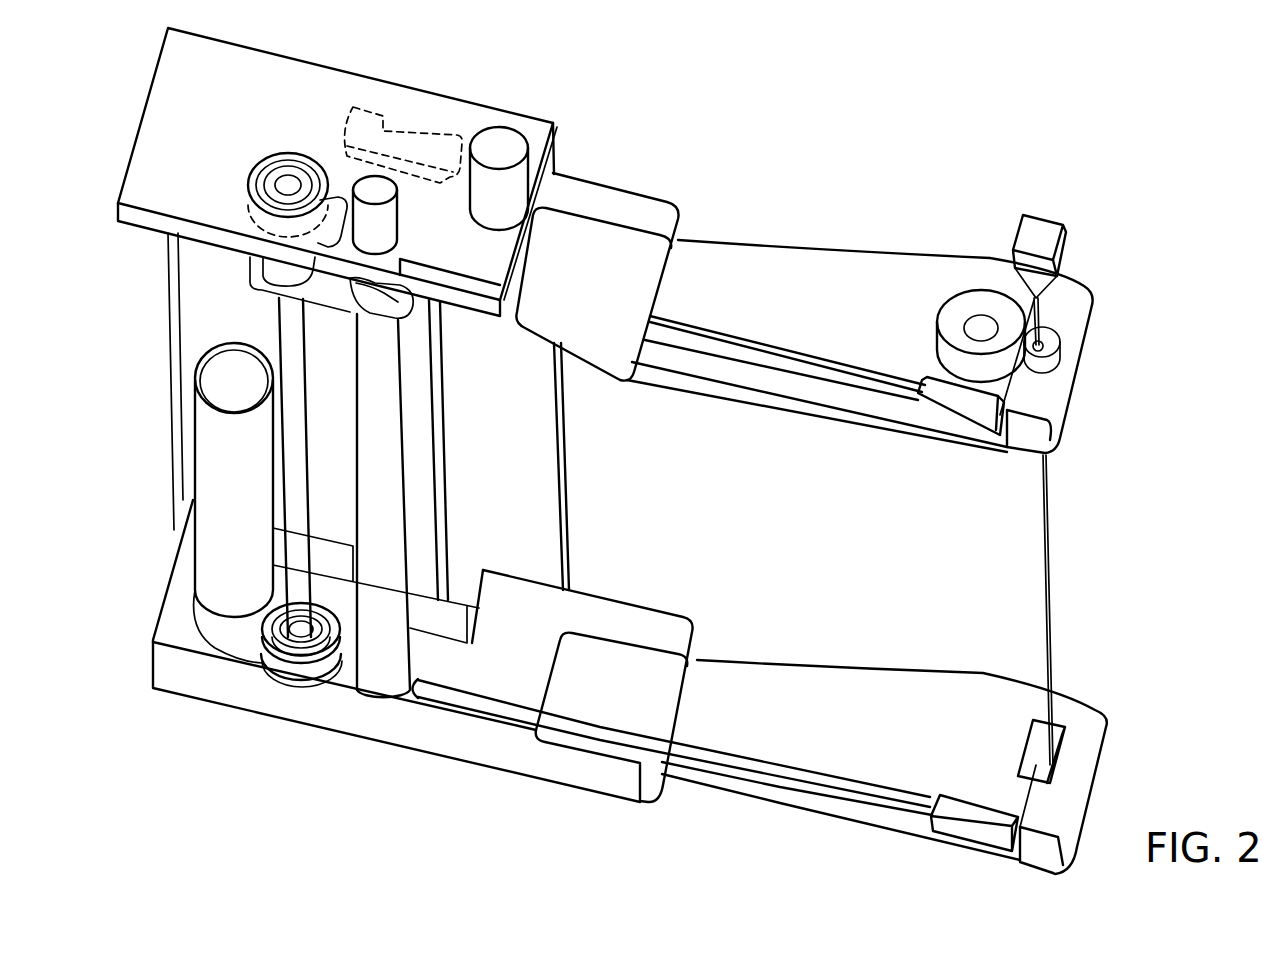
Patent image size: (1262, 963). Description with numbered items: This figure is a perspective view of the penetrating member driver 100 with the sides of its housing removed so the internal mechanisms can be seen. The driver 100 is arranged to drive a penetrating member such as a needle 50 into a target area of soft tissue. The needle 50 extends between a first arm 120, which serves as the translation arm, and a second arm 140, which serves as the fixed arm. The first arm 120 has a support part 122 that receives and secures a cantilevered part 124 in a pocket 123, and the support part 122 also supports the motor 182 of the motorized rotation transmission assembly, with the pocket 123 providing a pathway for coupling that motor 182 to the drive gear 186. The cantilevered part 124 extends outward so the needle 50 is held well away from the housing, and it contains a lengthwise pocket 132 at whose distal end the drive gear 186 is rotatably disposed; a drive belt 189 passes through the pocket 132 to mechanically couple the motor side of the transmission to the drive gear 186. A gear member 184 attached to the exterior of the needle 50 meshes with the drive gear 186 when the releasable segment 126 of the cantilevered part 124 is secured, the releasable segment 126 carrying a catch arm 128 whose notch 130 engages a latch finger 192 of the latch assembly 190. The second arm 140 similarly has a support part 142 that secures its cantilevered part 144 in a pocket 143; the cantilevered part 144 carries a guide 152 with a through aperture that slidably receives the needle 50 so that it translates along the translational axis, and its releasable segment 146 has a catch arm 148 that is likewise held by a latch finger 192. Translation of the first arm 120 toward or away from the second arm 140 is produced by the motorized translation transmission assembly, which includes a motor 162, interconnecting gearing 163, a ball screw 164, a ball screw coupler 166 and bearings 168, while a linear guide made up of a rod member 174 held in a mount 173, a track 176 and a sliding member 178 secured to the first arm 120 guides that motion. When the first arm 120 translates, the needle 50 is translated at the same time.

The needle 50 is at (1047, 527).
The penetrating member driver 100 is at (845, 138).
The first arm 120 is at (726, 128).
The support part 122 is at (670, 203).
The pocket 123 is at (603, 193).
The cantilevered part 124 is at (950, 430).
The releasable segment 126 is at (1080, 380).
The catch arm 128 is at (880, 403).
The notch 130 is at (480, 705).
The pocket 132 is at (733, 263).
The second arm 140 is at (686, 826).
The support part 142 is at (630, 600).
The pocket 143 is at (663, 643).
The cantilevered part 144 is at (920, 670).
The releasable segment 146 is at (1107, 747).
The catch arm 148 is at (802, 767).
The guide 152 is at (1062, 718).
The motor 162 is at (213, 433).
The interconnecting gearing 163 is at (220, 648).
The ball screw 164 is at (280, 317).
The ball screw coupler 166 is at (263, 262).
The bearings 168 is at (282, 150).
The mount 173 is at (369, 178).
The rod member 174 is at (393, 453).
The track 176 is at (427, 517).
The sliding member 178 is at (446, 122).
The motor 182 is at (513, 127).
The gear member 184 is at (1058, 330).
The drive gear 186 is at (990, 290).
The drive belt 189 is at (853, 280).
The latch assembly 190 is at (502, 782).
The latch finger 192 is at (522, 752).